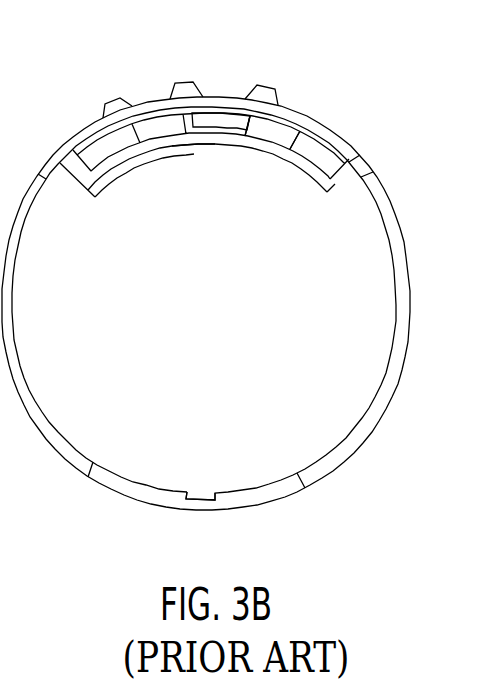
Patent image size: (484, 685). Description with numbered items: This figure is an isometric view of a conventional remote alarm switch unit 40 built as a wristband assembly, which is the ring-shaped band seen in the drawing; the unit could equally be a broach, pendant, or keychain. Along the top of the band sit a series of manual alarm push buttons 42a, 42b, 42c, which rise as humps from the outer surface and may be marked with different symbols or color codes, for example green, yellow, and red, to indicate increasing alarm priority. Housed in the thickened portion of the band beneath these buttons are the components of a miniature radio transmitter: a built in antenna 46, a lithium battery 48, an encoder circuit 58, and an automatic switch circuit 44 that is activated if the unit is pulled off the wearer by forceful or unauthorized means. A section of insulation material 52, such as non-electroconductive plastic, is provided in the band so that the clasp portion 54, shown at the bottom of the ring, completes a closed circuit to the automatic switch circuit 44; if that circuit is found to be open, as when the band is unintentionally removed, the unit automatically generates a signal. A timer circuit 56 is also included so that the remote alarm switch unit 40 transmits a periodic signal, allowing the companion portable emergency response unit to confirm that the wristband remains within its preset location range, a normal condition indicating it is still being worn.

The remote alarm switch unit 40 is at (392, 203).
The manual alarm push button 42a is at (118, 98).
The manual alarm push button 42b is at (187, 82).
The manual alarm push button 42c is at (263, 86).
The automatic switch circuit 44 is at (103, 147).
The built in antenna 46 is at (297, 140).
The lithium battery 48 is at (193, 140).
The section of insulation material 52 is at (340, 130).
The clasp portion 54 is at (203, 501).
The timer circuit 56 is at (158, 134).
The encoder circuit 58 is at (232, 124).